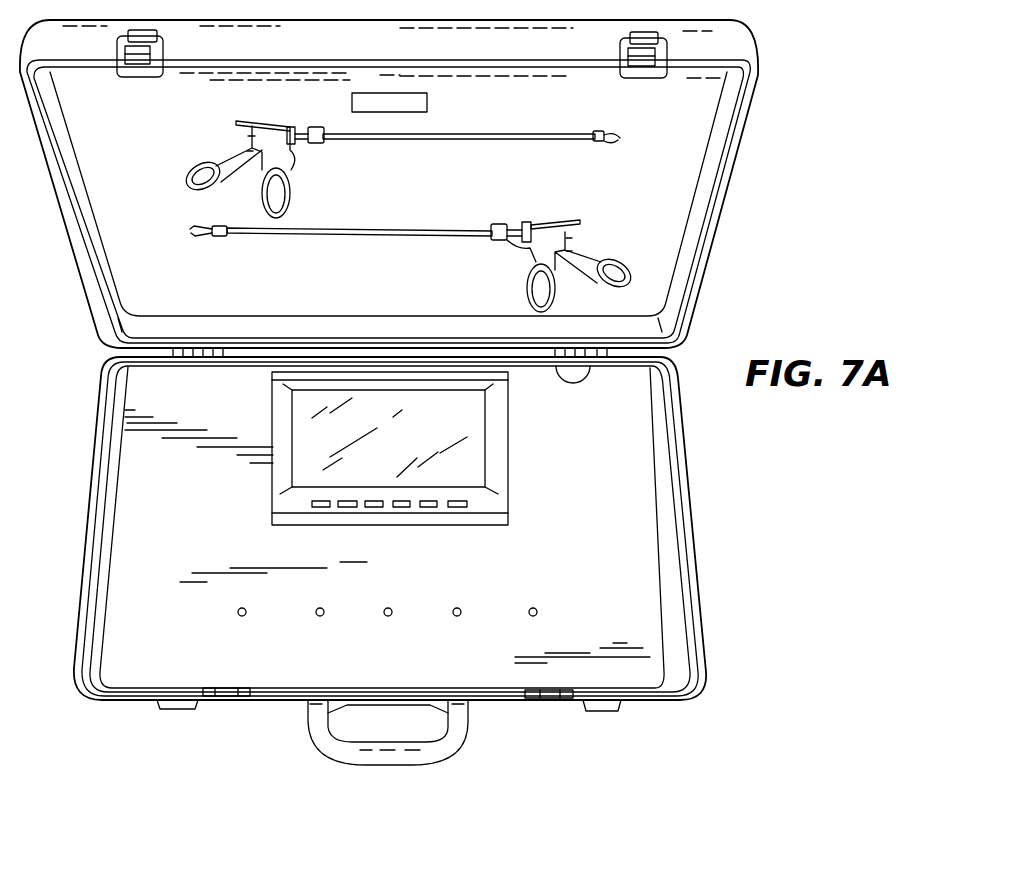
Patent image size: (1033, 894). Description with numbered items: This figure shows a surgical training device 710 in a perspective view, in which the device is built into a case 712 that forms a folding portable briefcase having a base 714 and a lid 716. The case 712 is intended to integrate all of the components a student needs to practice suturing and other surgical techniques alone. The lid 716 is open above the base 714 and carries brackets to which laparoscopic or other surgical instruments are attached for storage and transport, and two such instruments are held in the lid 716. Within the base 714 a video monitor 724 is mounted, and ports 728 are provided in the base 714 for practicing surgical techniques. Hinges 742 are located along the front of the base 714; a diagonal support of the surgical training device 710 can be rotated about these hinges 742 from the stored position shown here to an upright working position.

The surgical training device 710 is at (785, 80).
The case 712 is at (707, 313).
The base 714 is at (693, 553).
The lid 716 is at (723, 182).
The video monitor 724 is at (492, 443).
The ports 728 is at (318, 609).
The hinges 742 is at (235, 698).